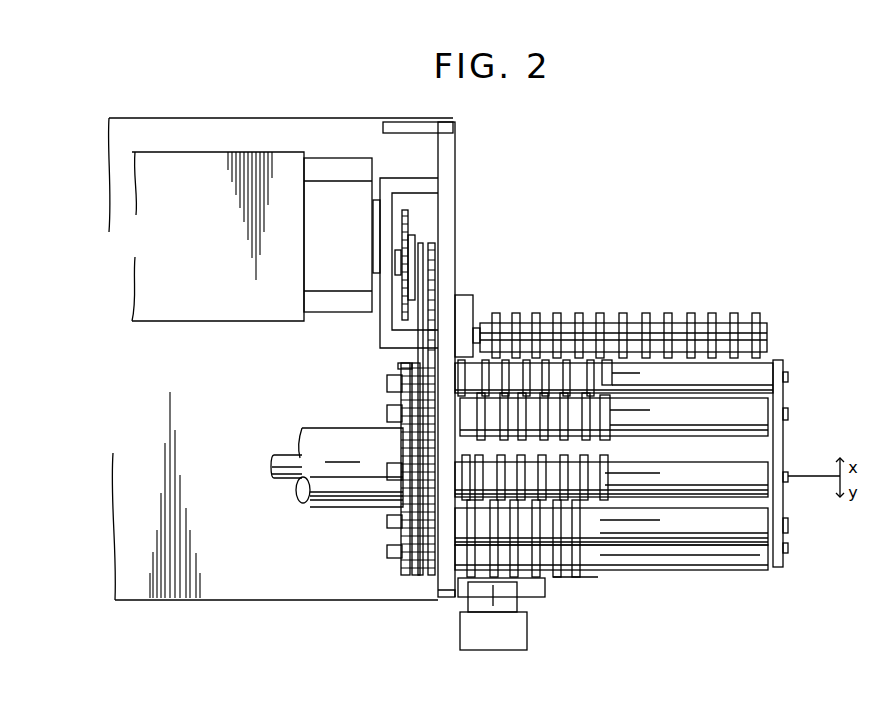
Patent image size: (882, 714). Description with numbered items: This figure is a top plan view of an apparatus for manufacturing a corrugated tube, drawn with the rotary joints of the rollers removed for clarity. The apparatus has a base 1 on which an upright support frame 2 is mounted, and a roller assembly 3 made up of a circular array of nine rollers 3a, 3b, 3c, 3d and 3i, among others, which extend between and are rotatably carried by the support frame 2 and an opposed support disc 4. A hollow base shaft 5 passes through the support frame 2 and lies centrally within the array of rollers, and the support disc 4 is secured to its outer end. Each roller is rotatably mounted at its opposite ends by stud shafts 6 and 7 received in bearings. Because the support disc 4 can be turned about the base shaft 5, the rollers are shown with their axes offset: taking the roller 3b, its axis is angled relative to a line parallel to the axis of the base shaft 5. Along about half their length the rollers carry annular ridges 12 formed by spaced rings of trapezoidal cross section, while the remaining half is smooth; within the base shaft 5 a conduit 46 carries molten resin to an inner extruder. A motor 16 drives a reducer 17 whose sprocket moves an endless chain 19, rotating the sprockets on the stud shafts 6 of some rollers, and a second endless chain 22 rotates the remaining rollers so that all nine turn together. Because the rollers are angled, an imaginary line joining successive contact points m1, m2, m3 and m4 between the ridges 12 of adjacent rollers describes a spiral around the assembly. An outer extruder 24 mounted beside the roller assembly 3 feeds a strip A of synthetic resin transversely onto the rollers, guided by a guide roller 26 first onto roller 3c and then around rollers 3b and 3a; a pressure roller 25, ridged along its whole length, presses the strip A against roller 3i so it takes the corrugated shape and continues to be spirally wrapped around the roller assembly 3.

The base 1 is at (262, 600).
The upright support frame 2 is at (455, 190).
The roller assembly 3 is at (644, 494).
The roller 3i is at (757, 372).
The roller 3a is at (765, 428).
The roller 3b is at (755, 470).
The roller 3c is at (757, 520).
The roller 3d is at (718, 568).
The support disc 4 is at (778, 360).
The hollow base shaft 5 is at (311, 505).
The stud shaft 6 is at (388, 548).
The stud shaft 7 is at (787, 378).
The annular ridges 12 is at (555, 578).
The motor 16 is at (200, 321).
The reducer 17 is at (376, 328).
The endless chain 19 is at (430, 285).
The second endless chain 22 is at (458, 403).
The outer extruder 24 is at (503, 650).
The pressure roller 25 is at (527, 322).
The guide roller 26 is at (543, 598).
The conduit 46 is at (284, 455).
The strip of synthetic resin material A is at (470, 606).
The contact point m1 is at (385, 382).
The contact point m2 is at (455, 490).
The contact point m3 is at (452, 546).
The motor m4 is at (455, 594).